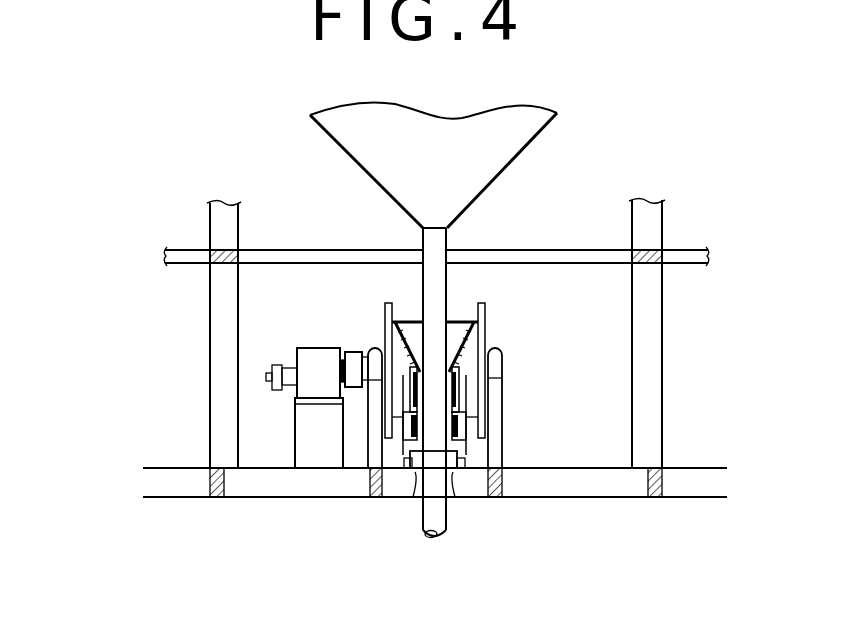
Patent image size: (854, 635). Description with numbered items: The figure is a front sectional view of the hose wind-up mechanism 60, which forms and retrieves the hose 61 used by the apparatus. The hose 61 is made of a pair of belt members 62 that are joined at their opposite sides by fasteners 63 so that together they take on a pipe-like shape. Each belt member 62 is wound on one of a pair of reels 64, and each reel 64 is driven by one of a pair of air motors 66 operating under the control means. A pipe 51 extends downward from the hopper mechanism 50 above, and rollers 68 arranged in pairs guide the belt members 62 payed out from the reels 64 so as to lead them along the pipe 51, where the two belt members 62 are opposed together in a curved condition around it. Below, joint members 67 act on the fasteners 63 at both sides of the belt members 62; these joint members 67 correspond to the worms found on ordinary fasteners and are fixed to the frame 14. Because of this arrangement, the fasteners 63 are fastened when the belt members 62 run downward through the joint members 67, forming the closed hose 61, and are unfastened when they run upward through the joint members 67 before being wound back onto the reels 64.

The frame 14 is at (680, 483).
The hopper mechanism 50 is at (330, 160).
The pipe 51 is at (427, 238).
The hose wind-up mechanism 60 is at (185, 372).
The hose 61 is at (428, 535).
The belt members 62 is at (458, 322).
The fasteners 63 is at (480, 338).
The reels 64 is at (385, 323).
The air motors 66 is at (318, 350).
The joint members 67 is at (415, 478).
The rollers 68 is at (462, 386).